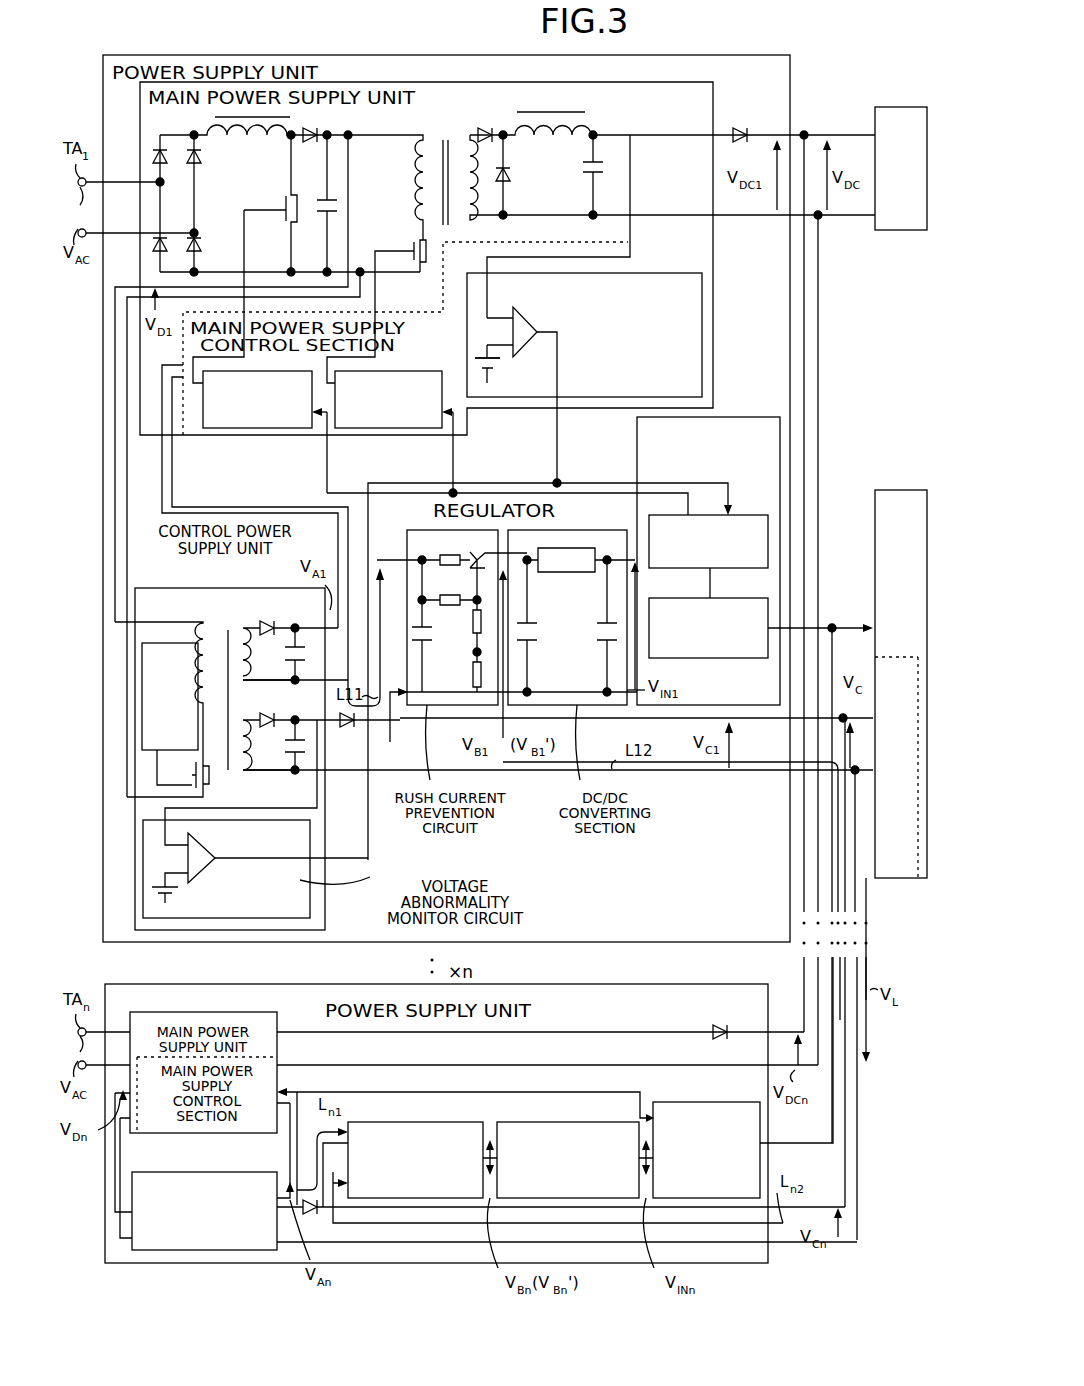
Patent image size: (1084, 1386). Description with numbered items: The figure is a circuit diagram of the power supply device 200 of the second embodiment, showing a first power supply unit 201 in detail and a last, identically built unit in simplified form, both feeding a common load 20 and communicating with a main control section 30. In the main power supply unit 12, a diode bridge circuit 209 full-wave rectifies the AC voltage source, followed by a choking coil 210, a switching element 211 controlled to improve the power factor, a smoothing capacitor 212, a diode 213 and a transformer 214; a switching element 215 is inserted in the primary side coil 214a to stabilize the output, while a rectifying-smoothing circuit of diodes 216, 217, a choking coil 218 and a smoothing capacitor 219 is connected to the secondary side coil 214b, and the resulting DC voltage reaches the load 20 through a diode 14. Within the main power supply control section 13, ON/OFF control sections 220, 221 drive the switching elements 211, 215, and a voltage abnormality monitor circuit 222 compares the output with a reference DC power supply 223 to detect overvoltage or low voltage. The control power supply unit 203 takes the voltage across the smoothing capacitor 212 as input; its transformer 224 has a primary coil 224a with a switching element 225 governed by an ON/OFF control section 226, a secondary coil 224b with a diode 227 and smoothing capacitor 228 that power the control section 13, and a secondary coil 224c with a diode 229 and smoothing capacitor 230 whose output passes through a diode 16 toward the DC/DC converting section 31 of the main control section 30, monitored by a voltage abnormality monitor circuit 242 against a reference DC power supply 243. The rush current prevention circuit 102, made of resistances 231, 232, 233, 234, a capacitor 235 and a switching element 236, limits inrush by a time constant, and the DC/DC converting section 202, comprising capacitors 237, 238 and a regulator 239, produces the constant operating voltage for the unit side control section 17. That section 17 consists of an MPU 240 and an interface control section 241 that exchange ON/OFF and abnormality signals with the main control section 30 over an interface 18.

The power supply device 200 is at (724, 61).
The power supply unit 201 is at (440, 59).
The main power supply unit 12 is at (405, 85).
The main power supply control section 13 is at (394, 315).
The diode 14 is at (729, 126).
The diode 16 is at (345, 738).
The unit side control section 17 is at (755, 417).
The interface 18 is at (807, 630).
The load 20 is at (900, 106).
The main control section 30 is at (895, 492).
The DC/DC converting section 31 is at (894, 885).
The rush current prevention circuit 102 is at (406, 1124).
The DC/DC converting section 202 is at (582, 522).
The control power supply unit 203 is at (230, 590).
The diode bridge circuit 209 is at (208, 200).
The choking coil 210 is at (241, 135).
The switching element 211 is at (276, 208).
The smoothing capacitor 212 is at (318, 226).
The diode 213 is at (312, 133).
The transformer 214 is at (425, 177).
The primary side coil 214a is at (420, 178).
The secondary side coil 214b is at (469, 218).
The switching element 215 is at (410, 249).
The diode 216 is at (484, 123).
The diode 217 is at (506, 177).
The choking coil 218 is at (547, 134).
The smoothing capacitor 219 is at (582, 183).
The ON/OFF control section 220 is at (265, 376).
The ON/OFF control section 221 is at (419, 374).
The voltage abnormality monitor circuit 222 is at (522, 307).
The reference DC power supply 223 is at (500, 372).
The transformer 224 is at (231, 680).
The primary coil 224a is at (200, 622).
The secondary coil 224b is at (248, 624).
The secondary coil 224c is at (246, 720).
The switching element 225 is at (212, 780).
The ON/OFF control section 226 is at (153, 652).
The diode 227 is at (284, 629).
The smoothing capacitor 228 is at (294, 670).
The diode 229 is at (284, 721).
The smoothing capacitor 230 is at (294, 760).
The resistance 231 is at (442, 553).
The resistance 232 is at (448, 593).
The resistance 233 is at (468, 630).
The resistance 234 is at (464, 672).
The capacitor 235 is at (420, 650).
The switching element 236 is at (476, 558).
The capacitor 237 is at (540, 644).
The capacitor 238 is at (599, 644).
The regulator 239 is at (576, 573).
The MPU 240 is at (730, 570).
The interface control section 241 is at (730, 660).
The voltage abnormality monitor circuit 242 is at (210, 862).
The reference DC power supply 243 is at (176, 906).